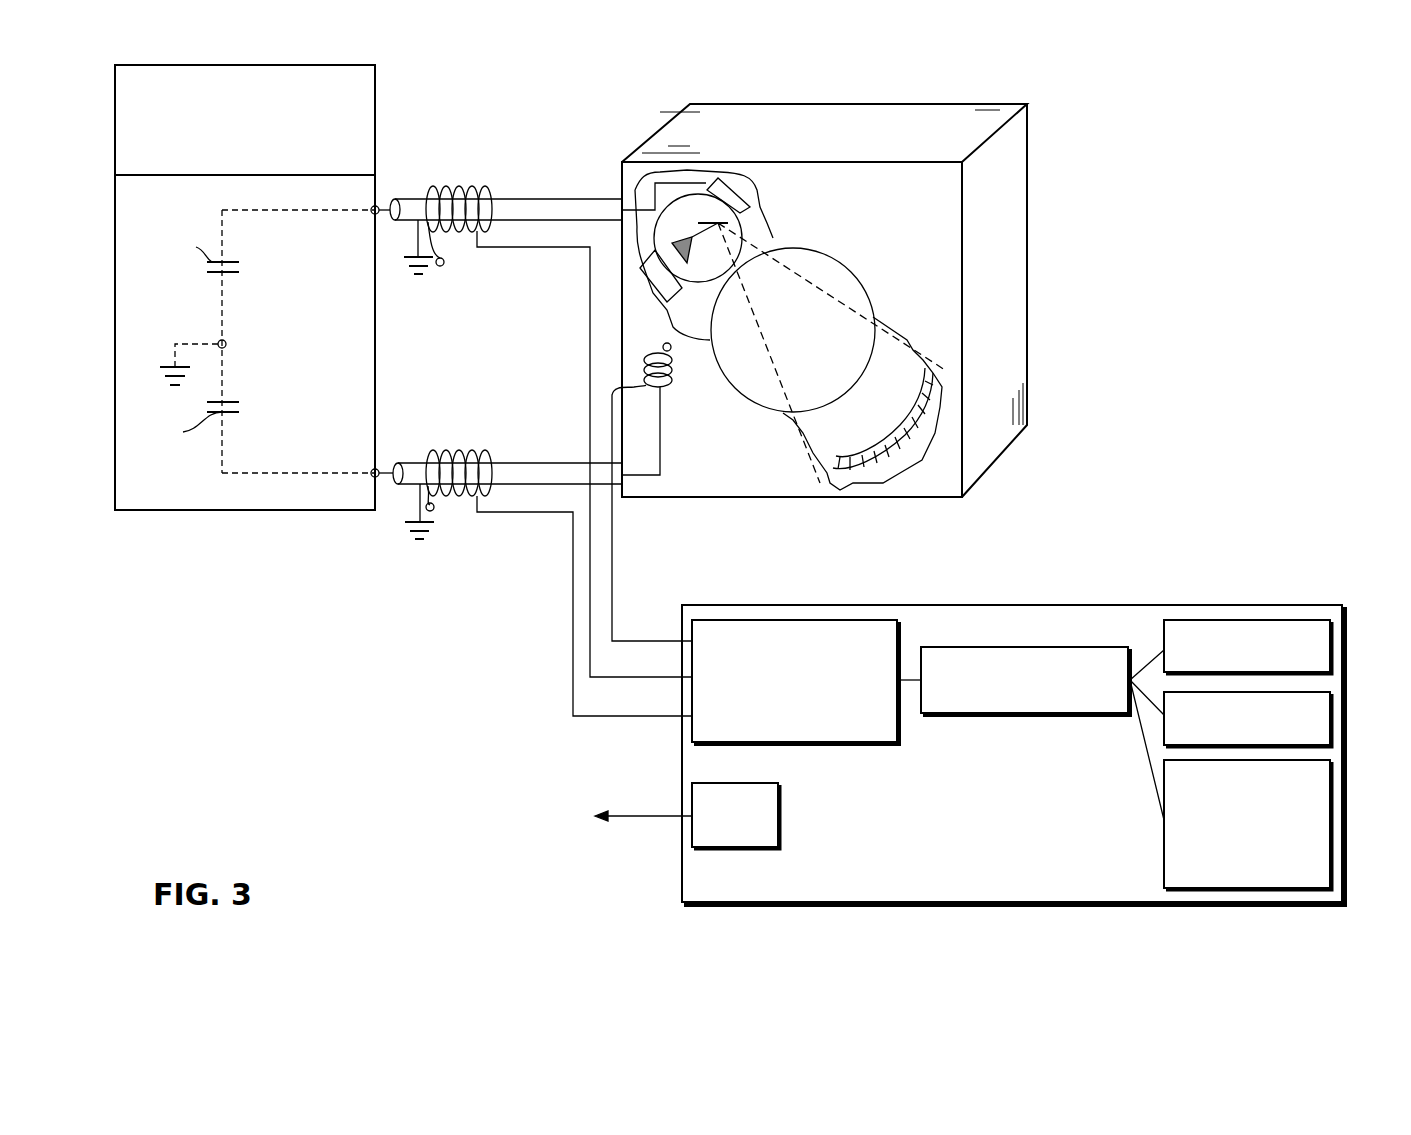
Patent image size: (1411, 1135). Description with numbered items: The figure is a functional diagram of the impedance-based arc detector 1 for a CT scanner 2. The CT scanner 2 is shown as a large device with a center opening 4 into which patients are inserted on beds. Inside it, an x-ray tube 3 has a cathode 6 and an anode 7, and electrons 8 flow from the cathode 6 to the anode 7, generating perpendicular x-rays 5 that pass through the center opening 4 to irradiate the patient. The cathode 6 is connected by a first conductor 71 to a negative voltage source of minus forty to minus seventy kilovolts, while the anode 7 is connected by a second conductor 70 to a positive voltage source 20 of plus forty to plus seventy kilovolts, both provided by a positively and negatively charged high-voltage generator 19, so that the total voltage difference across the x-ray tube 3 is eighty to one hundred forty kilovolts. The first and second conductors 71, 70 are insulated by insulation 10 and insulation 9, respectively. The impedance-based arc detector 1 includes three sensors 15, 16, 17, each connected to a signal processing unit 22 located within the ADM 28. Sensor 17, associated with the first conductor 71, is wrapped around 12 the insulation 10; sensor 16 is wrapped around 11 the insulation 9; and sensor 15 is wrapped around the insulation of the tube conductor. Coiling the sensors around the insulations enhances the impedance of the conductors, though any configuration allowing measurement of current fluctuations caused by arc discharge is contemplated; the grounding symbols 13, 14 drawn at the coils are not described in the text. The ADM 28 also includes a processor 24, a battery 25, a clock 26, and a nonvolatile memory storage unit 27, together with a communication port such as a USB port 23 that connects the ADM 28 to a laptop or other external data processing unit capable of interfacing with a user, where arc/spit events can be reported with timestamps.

The impedance-based arc detector 1 is at (1132, 198).
The CT scanner 2 is at (1015, 187).
The x-ray tube 3 is at (750, 213).
The center opening 4 is at (848, 264).
The x-rays 5 is at (860, 322).
The cathode 6 is at (678, 298).
The anode 7 is at (718, 220).
The electrons 8 is at (682, 246).
The insulation 9 is at (597, 199).
The insulation 10 is at (419, 460).
The wrapping of sensor around insulation 11 is at (472, 187).
The wrapping of sensor around insulation 12 is at (465, 450).
The ground 13 is at (426, 272).
The ground 14 is at (428, 537).
The sensor 15 is at (628, 641).
The sensor 16 is at (628, 677).
The sensor 17 is at (628, 716).
The high-voltage generator 19 is at (372, 112).
The positive voltage source 20 is at (228, 262).
The signal processing unit 22 is at (178, 340).
The USB port 23 is at (782, 824).
The processor 24 is at (995, 647).
The battery 25 is at (1333, 648).
The clock 26 is at (1333, 723).
The nonvolatile memory storage unit 27 is at (1333, 818).
The ADM 28 is at (918, 906).
The second conductor 70 is at (387, 205).
The first conductor 71 is at (228, 402).